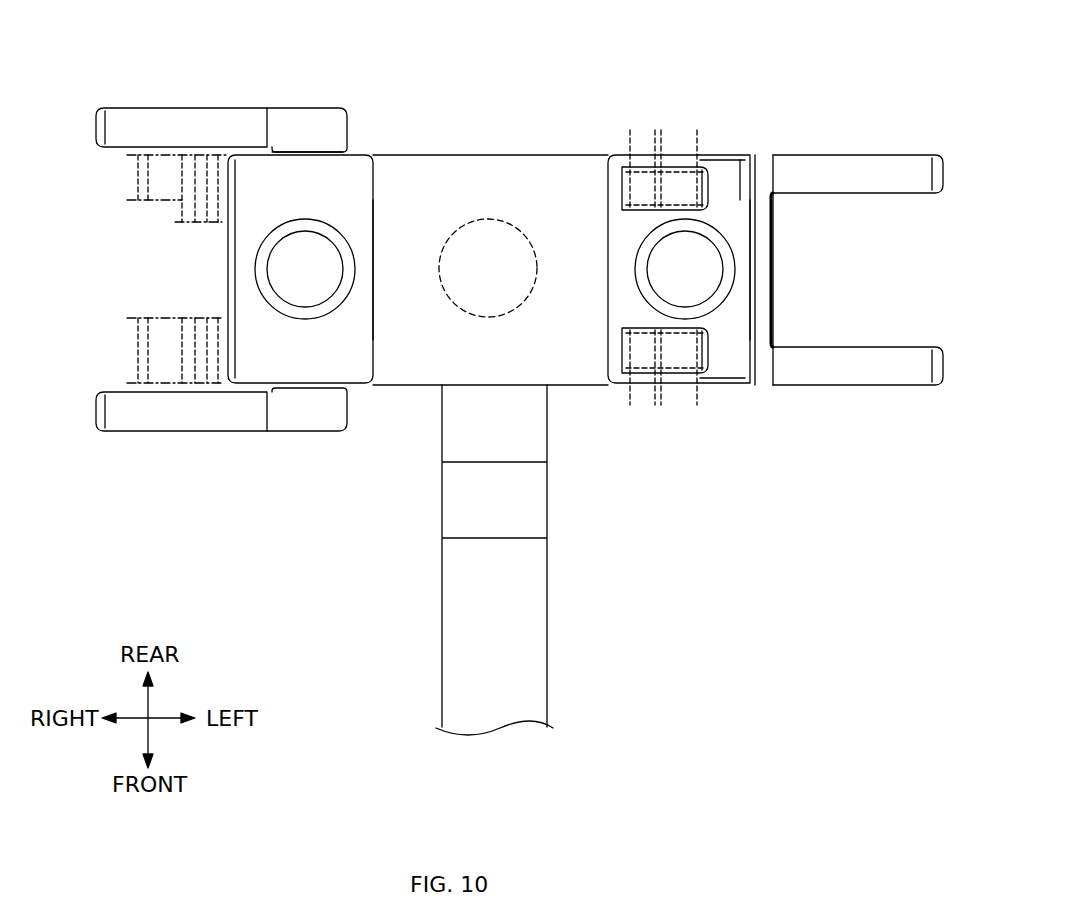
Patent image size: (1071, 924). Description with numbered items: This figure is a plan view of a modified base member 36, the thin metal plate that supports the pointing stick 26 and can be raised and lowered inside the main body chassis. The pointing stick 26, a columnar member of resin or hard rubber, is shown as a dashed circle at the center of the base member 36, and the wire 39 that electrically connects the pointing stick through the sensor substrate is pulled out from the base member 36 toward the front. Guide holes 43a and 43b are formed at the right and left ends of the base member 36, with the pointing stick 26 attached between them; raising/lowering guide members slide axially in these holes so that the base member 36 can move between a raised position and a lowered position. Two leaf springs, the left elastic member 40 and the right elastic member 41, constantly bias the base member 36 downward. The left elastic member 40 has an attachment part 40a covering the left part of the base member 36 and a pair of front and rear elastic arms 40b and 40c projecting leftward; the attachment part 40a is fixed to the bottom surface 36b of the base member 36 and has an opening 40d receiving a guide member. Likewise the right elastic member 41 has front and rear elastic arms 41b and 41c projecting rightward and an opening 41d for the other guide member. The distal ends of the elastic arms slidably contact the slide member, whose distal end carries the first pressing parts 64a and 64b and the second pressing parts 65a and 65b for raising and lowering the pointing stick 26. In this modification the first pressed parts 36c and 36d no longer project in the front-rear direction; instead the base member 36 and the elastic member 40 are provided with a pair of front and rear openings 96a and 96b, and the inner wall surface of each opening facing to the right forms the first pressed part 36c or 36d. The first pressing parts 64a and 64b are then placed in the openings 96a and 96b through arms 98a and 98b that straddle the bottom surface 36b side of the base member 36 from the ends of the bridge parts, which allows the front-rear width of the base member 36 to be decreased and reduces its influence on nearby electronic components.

The pointing stick 26 is at (462, 316).
The base member 36 is at (438, 198).
The bottom surface of the base member 36b is at (548, 185).
The first pressed part 36c is at (712, 360).
The first pressed part 36d is at (708, 180).
The wire 39 is at (525, 640).
The elastic member 40 is at (740, 382).
The attachment part 40a is at (725, 346).
The elastic arm 40b is at (900, 368).
The elastic arm 40c is at (896, 170).
The opening 40d is at (652, 250).
The elastic member 41 is at (287, 110).
The elastic arm 41b is at (153, 415).
The elastic arm 41c is at (153, 125).
The opening 41d is at (320, 258).
The guide hole 43a is at (712, 285).
The guide hole 43b is at (262, 270).
The first pressing part 64a is at (695, 392).
The first pressing part 64b is at (695, 150).
The second pressing part 65a is at (214, 360).
The second pressing part 65b is at (214, 215).
The opening 96a is at (656, 356).
The opening 96b is at (655, 186).
The arm 98a is at (630, 398).
The arm 98b is at (630, 146).